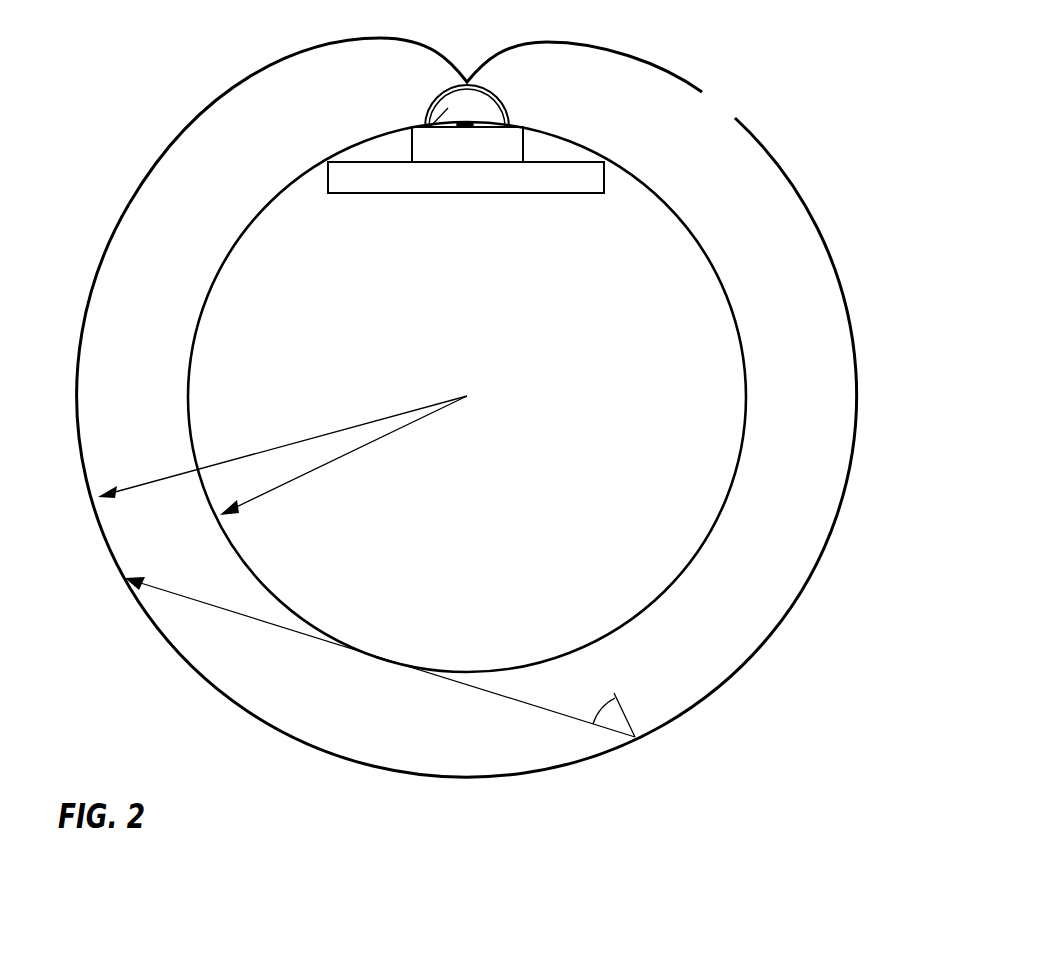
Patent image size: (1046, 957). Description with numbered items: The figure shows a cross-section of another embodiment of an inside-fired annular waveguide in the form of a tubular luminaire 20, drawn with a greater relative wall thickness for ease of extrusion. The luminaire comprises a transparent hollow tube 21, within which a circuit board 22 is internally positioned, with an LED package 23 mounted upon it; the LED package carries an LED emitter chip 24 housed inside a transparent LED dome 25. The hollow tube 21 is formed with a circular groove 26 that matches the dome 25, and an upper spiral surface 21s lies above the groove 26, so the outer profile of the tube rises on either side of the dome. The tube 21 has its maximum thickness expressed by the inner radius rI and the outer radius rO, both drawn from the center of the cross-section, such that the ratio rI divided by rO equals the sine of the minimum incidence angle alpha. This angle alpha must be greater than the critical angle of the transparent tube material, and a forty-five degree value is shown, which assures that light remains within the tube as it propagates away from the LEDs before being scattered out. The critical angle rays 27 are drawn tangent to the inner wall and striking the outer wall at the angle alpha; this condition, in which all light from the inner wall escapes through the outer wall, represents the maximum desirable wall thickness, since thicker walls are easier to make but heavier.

The tubular luminaire 20 is at (794, 698).
The transparent hollow tube 21 is at (788, 336).
The upper spiral surface 21s is at (485, 70).
The circuit board 22 is at (467, 182).
The LED package 23 is at (492, 140).
The LED emitter chip 24 is at (458, 132).
The transparent LED dome 25 is at (467, 118).
The circular groove 26 is at (418, 100).
The critical angle rays 27 is at (243, 620).
The outer radius rO is at (292, 437).
The inner radius rI is at (283, 493).
The minimum incidence angle alpha is at (593, 705).